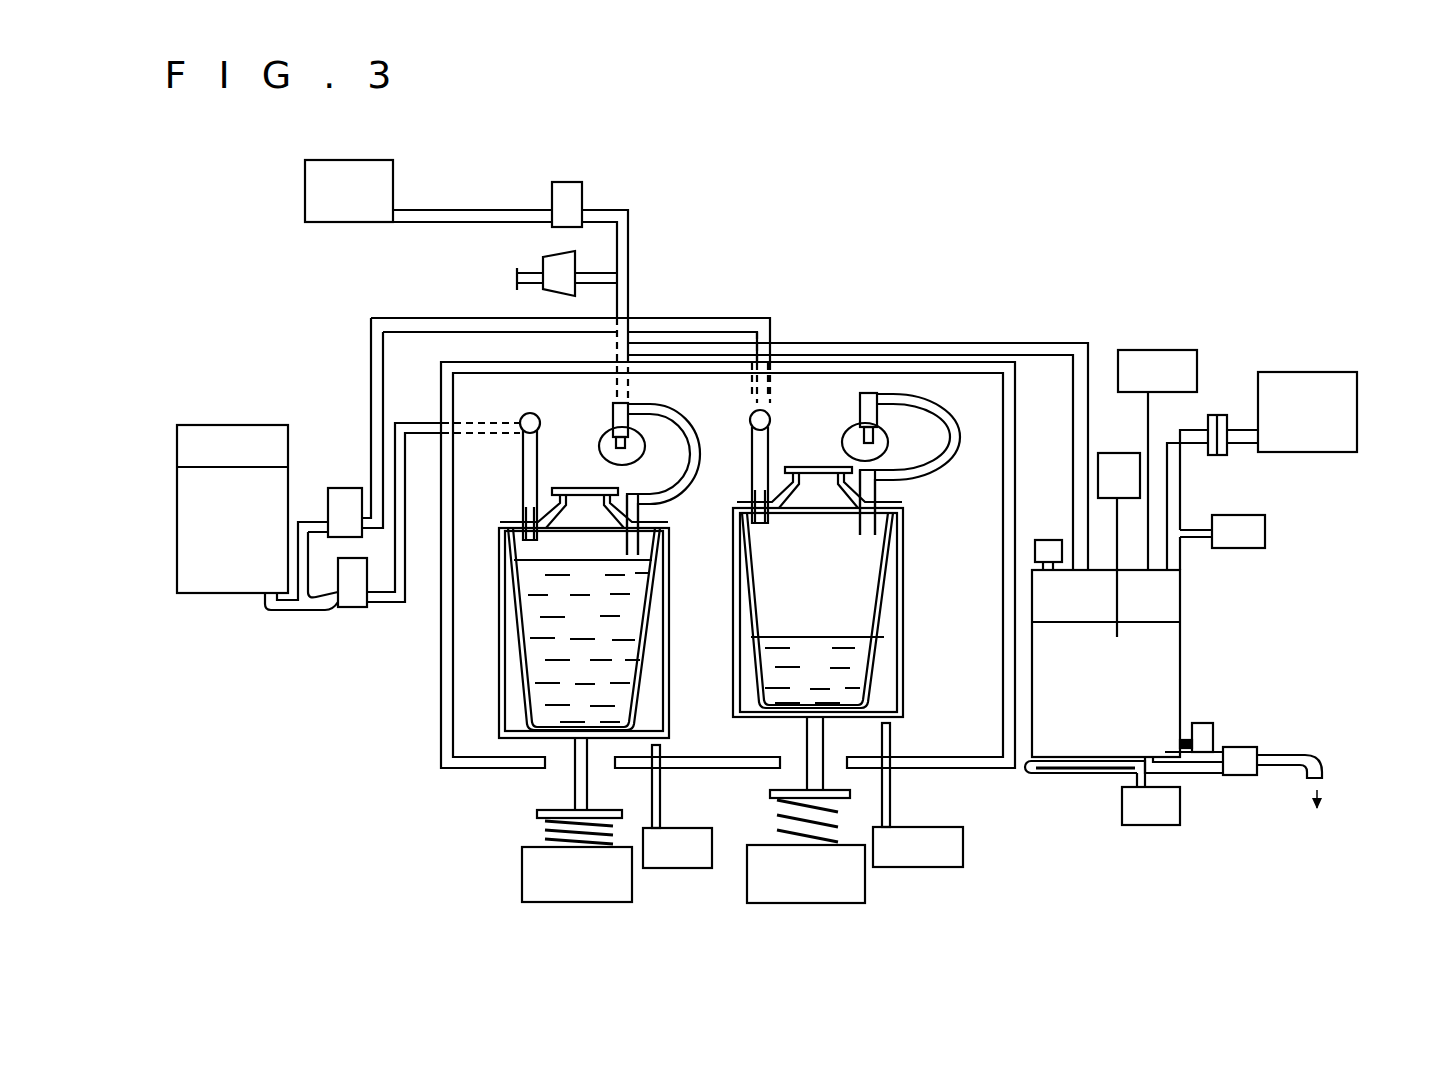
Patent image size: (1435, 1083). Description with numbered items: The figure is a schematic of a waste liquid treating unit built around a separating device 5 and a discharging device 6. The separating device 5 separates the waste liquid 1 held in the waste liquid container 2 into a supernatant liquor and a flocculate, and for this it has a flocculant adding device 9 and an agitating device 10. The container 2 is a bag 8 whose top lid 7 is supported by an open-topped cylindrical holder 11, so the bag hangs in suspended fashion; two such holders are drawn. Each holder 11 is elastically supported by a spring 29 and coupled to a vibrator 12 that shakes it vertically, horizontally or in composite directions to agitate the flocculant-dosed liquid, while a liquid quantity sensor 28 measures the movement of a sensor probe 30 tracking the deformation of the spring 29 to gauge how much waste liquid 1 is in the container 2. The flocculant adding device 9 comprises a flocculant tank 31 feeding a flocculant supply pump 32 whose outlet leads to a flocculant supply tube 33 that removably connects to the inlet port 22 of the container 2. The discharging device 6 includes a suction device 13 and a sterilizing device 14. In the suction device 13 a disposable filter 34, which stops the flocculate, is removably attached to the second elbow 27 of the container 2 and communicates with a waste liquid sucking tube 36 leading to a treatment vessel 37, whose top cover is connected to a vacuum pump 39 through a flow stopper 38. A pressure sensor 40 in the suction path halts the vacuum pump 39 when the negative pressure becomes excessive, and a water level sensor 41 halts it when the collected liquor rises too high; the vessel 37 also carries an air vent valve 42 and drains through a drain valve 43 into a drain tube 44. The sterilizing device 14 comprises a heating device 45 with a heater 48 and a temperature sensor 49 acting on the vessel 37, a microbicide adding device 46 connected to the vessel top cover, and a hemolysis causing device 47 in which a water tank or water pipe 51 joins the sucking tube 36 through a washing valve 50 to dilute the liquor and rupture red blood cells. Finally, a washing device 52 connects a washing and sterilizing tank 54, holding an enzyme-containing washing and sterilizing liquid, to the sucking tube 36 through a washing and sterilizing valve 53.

The waste liquid 1 is at (699, 641).
The waste liquid container 2 is at (645, 553).
The separating device 5 is at (765, 298).
The discharging device 6 is at (1213, 344).
The top lid 7 is at (513, 523).
The bag 8 is at (650, 612).
The flocculant adding device 9 is at (318, 650).
The agitating device 10 is at (466, 781).
The cylindrical holder 11 is at (670, 660).
The vibrator 12 is at (574, 887).
The suction device 13 is at (1300, 371).
The sterilizing device 14 is at (1139, 343).
The inlet port 22 is at (527, 510).
The second elbow 27 is at (617, 420).
The liquid quantity sensor 28 is at (684, 857).
The spring 29 is at (545, 830).
The sensor probe 30 is at (660, 790).
The flocculant tank 31 is at (229, 593).
The flocculant supply pump 32 is at (333, 500).
The flocculant supply tube 33 is at (398, 325).
The filter 34 is at (607, 447).
The waste liquid sucking tube 36 is at (816, 343).
The treatment vessel 37 is at (1181, 697).
The flow stopper 38 is at (1207, 452).
The vacuum pump 39 is at (1345, 425).
The pressure sensor 40 is at (1243, 535).
The water level sensor 41 is at (1116, 466).
The air vent valve 42 is at (1050, 542).
The drain valve 43 is at (1242, 775).
The drain tube 44 is at (1325, 768).
The heating device 45 is at (1141, 831).
The microbicide adding device 46 is at (1167, 350).
The hemolysis causing device 47 is at (603, 259).
The heater 48 is at (1075, 777).
The temperature sensor 49 is at (1213, 735).
The washing valve 50 is at (549, 260).
The water tank or water pipe 51 is at (528, 280).
The washing device 52 is at (463, 182).
The washing and sterilizing valve 53 is at (568, 185).
The washing and sterilizing tank 54 is at (320, 195).